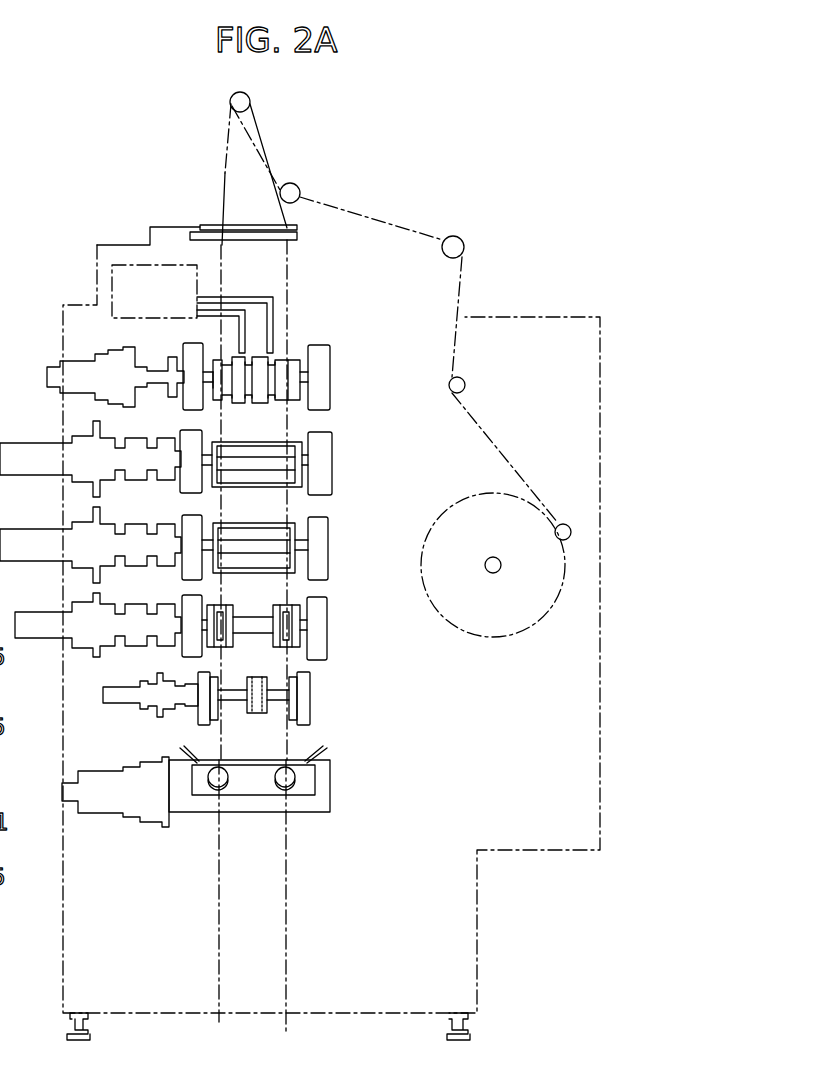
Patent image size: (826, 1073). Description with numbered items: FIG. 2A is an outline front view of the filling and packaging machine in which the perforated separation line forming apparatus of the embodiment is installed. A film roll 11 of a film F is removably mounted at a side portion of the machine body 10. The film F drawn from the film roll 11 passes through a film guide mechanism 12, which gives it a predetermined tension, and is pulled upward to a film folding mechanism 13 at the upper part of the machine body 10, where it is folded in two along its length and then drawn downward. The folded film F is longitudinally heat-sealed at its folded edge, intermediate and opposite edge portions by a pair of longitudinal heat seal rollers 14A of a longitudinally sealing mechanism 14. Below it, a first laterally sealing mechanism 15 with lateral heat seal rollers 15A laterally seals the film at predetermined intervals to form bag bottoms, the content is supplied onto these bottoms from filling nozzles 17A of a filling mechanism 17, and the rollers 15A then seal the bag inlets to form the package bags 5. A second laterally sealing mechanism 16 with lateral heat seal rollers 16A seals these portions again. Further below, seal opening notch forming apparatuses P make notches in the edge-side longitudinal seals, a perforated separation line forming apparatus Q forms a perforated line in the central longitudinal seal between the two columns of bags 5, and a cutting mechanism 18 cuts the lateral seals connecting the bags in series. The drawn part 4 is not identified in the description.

The machine body 10 is at (125, 182).
The film folding mechanism 13 is at (285, 148).
The film guide mechanism 12 is at (500, 428).
The film roll 11 is at (520, 628).
The filling mechanism 17 is at (125, 290).
The filling nozzles 17A is at (255, 297).
The film F is at (292, 320).
The package bags 5 is at (287, 870).
The longitudinally sealing mechanism 14 is at (230, 358).
The longitudinal heat seal rollers 14A is at (288, 365).
The first laterally sealing mechanism 15 is at (205, 444).
The lateral heat seal rollers 15A is at (268, 447).
The second laterally sealing mechanism 16 is at (202, 533).
The lateral heat seal rollers 16A is at (272, 530).
The seal opening notch forming apparatuses P is at (335, 622).
The perforated separation line forming apparatus Q is at (247, 707).
The capstan 4 is at (263, 713).
The cutting mechanism 18 is at (343, 782).